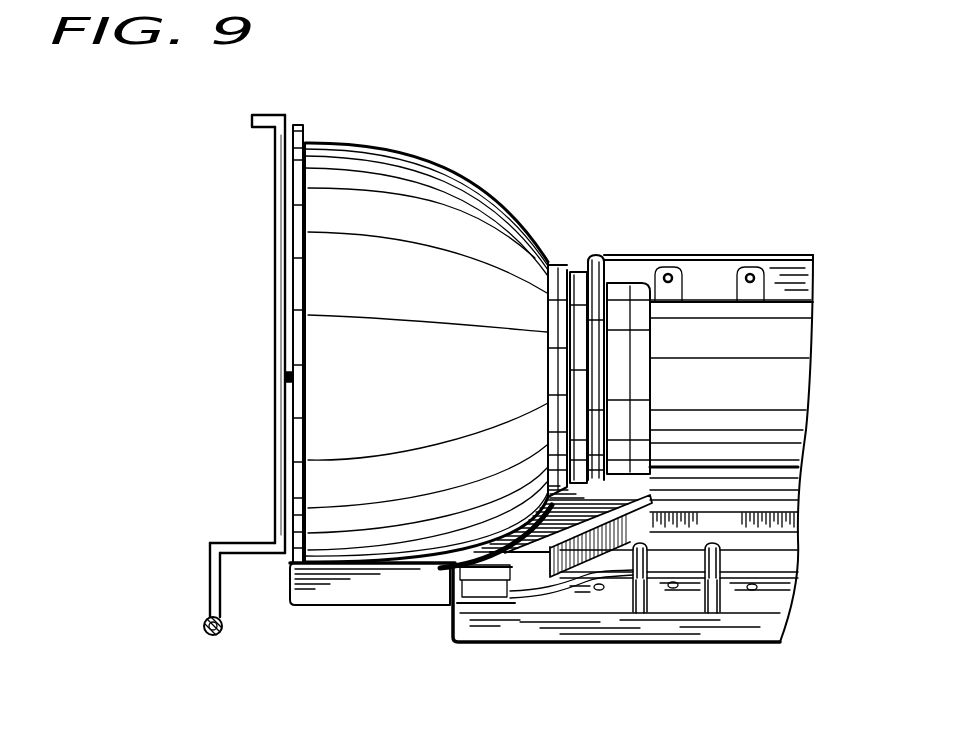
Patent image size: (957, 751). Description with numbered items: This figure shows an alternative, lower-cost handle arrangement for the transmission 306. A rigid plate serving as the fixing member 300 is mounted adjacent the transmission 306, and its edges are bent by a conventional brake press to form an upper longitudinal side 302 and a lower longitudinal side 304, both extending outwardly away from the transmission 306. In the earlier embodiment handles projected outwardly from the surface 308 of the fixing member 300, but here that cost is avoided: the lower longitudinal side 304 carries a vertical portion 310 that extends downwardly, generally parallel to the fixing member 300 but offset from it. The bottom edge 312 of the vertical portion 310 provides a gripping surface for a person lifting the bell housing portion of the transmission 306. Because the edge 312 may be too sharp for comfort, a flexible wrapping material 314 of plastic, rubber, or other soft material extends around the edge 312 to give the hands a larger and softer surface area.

The fixing member 300 is at (275, 253).
The longitudinal side 302 is at (252, 117).
The lower longitudinal side 304 is at (238, 547).
The transmission 306 is at (473, 213).
The surface 308 is at (273, 173).
The vertical portion 310 is at (208, 587).
The bottom edge 312 is at (217, 637).
The flexible wrapping material 314 is at (200, 623).